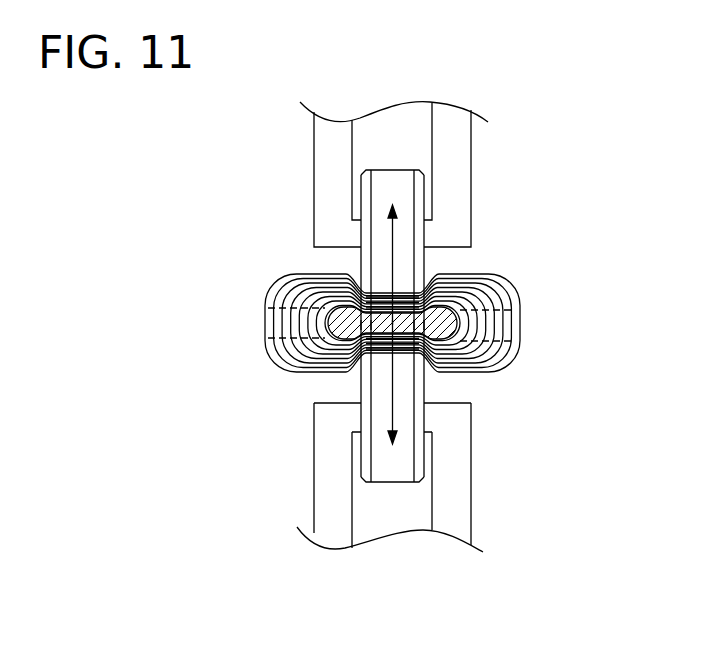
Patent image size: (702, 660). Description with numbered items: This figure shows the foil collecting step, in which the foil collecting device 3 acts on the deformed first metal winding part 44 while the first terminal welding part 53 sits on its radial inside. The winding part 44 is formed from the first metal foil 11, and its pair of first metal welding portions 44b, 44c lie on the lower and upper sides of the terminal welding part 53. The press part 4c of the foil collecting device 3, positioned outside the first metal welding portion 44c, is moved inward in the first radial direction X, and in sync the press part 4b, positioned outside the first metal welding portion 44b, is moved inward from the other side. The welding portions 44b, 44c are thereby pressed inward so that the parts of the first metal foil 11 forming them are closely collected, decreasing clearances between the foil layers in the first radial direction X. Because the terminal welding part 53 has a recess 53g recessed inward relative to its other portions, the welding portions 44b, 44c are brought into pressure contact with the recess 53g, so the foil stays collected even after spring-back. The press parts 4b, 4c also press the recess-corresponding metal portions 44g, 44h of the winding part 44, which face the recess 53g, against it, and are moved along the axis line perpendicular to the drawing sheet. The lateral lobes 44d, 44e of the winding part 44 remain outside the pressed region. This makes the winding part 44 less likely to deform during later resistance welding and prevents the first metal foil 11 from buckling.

The foil collecting device 3 is at (488, 164).
The press part 4b is at (424, 403).
The press part 4c is at (406, 266).
The first metal foil 11 is at (290, 373).
The first metal winding part 44 is at (308, 278).
The first metal welding portion 44b is at (423, 387).
The first metal welding portion 44c is at (414, 285).
The left winding lobe 44d is at (268, 329).
The right winding lobe 44e is at (518, 330).
The recess-corresponding metal portion 44g is at (318, 274).
The recess-corresponding metal portion 44h is at (357, 392).
The first terminal welding part 53 is at (347, 330).
The recess 53g is at (458, 276).
The first radial direction X is at (390, 262).